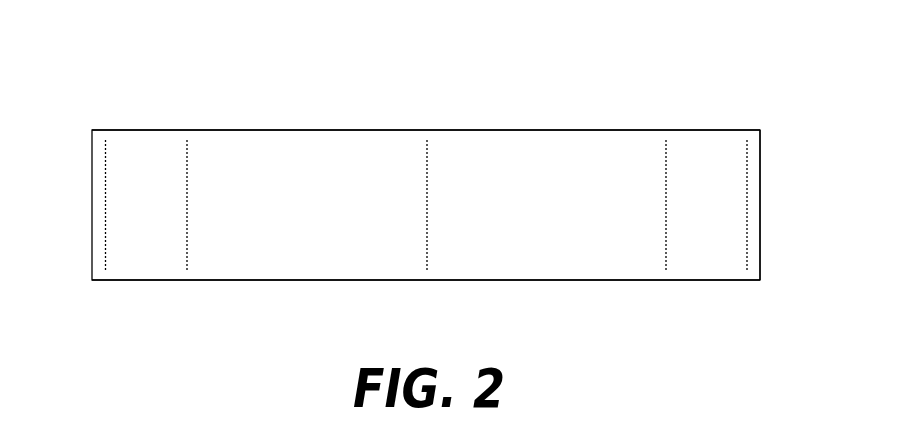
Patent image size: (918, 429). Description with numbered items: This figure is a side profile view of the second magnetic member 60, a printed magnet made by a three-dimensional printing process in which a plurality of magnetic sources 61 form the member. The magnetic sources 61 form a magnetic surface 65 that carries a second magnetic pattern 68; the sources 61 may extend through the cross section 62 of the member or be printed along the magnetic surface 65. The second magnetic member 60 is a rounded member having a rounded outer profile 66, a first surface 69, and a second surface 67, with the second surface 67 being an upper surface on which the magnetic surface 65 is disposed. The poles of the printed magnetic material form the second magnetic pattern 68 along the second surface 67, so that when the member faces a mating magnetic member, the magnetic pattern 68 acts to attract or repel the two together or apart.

The second magnetic member 60 is at (777, 135).
The magnetic sources 61 is at (595, 130).
The cross section 62 is at (115, 243).
The magnetic surface 65 is at (687, 130).
The rounded outer profile 66 is at (760, 227).
The second surface 67 is at (482, 130).
The second magnetic pattern 68 is at (307, 70).
The first surface 69 is at (578, 280).